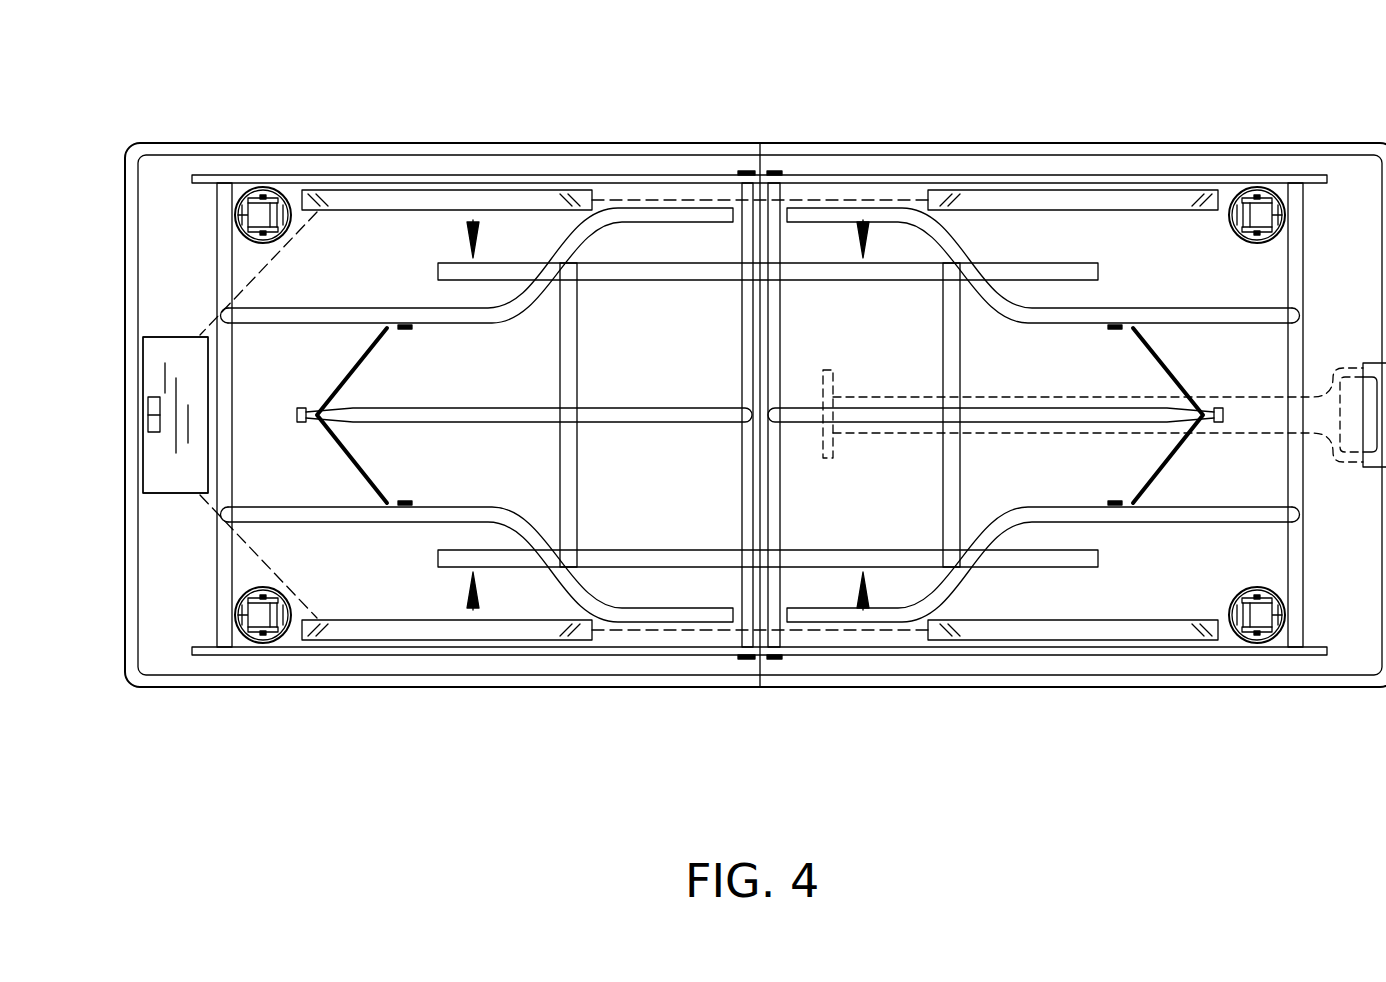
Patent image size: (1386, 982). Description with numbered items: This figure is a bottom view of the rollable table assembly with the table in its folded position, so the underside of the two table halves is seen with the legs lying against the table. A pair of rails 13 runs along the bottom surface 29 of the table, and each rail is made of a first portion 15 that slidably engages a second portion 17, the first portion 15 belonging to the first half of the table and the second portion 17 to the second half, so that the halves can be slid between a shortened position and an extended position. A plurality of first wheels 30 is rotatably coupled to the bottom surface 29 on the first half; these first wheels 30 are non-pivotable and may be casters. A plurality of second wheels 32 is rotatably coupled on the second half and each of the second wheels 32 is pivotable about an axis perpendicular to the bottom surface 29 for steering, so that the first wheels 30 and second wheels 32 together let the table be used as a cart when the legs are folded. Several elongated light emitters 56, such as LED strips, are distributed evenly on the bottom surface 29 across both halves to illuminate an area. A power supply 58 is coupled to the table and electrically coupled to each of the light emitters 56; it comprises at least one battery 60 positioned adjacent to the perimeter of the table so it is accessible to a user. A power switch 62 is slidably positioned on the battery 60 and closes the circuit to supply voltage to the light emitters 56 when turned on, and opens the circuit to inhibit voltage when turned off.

The rails 13 is at (688, 265).
The first portion 15 is at (863, 220).
The second portion 17 is at (473, 220).
The bottom surface 29 is at (370, 248).
The first wheels 30 is at (240, 212).
The second wheels 32 is at (1285, 215).
The light emitters 56 is at (527, 198).
The power supply 58 is at (165, 337).
The battery 60 is at (178, 470).
The power switch 62 is at (150, 425).